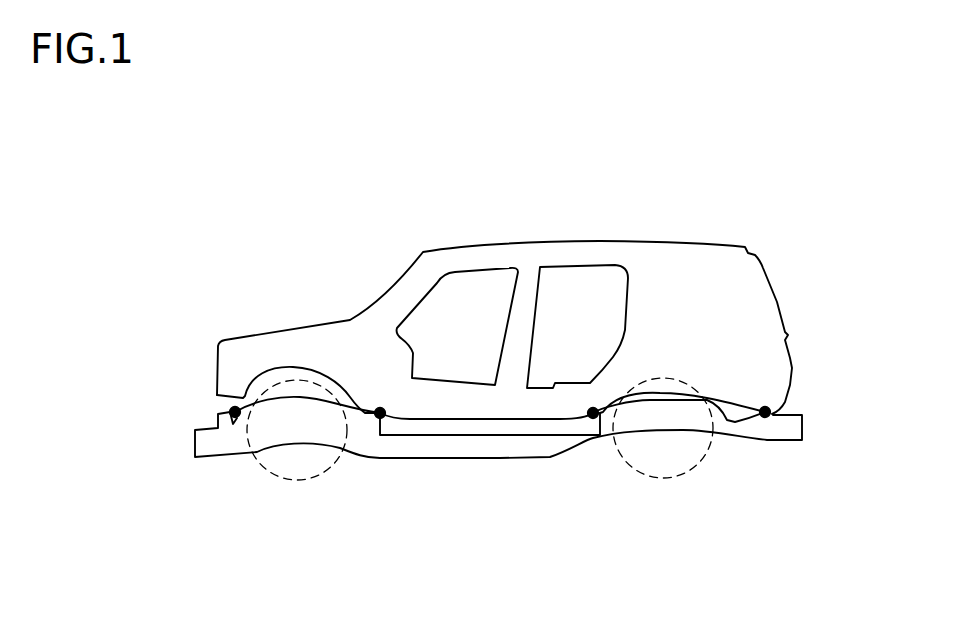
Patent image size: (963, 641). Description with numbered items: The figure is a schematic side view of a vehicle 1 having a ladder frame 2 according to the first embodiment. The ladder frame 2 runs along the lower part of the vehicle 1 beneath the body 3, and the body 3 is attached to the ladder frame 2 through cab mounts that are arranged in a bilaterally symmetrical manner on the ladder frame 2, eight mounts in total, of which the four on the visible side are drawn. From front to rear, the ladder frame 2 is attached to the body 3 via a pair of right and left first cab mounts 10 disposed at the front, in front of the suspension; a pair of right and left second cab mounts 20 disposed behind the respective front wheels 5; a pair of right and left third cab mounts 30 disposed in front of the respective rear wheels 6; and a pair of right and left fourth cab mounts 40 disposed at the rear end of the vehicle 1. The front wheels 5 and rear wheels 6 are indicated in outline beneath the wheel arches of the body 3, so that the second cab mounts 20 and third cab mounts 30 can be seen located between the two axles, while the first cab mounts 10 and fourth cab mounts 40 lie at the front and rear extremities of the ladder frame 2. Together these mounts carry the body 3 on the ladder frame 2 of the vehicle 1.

The vehicle 1 is at (670, 221).
The ladder frame 2 is at (492, 450).
The body 3 is at (468, 262).
The front wheels 5 is at (297, 478).
The rear wheels 6 is at (680, 473).
The first cab mounts 10 is at (235, 418).
The second cab mounts 20 is at (380, 418).
The third cab mounts 30 is at (593, 418).
The fourth cab mounts 40 is at (765, 418).